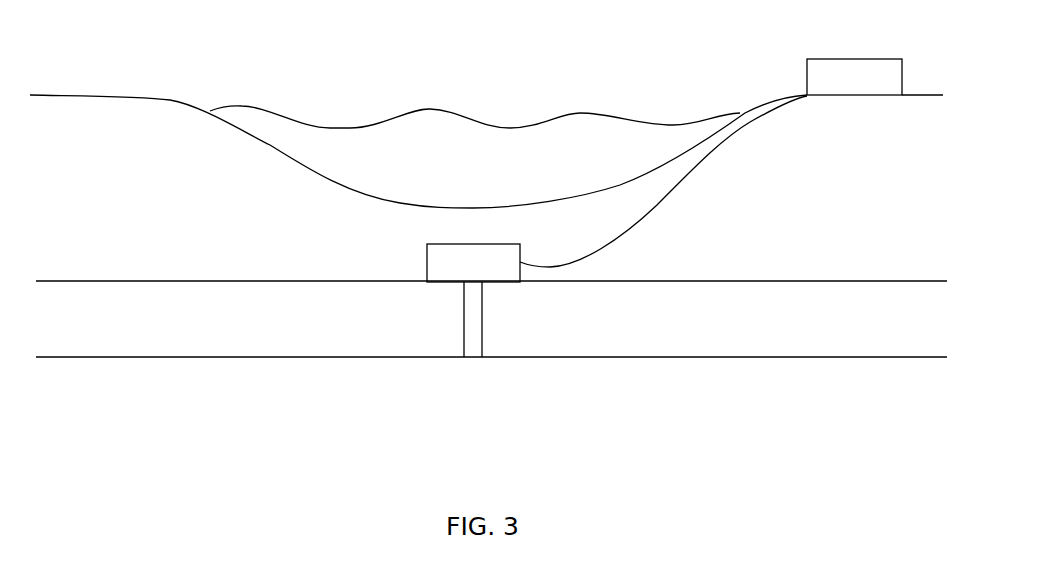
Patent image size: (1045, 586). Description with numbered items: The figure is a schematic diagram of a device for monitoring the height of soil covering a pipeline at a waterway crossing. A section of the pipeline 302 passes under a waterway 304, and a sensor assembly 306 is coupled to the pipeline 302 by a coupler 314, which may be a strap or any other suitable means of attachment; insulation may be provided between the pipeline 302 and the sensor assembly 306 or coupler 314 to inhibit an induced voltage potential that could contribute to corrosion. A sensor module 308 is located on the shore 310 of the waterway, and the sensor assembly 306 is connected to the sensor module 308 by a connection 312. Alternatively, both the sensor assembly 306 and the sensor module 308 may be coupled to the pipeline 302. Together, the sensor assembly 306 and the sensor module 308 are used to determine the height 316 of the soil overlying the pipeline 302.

The pipeline 302 is at (323, 330).
The waterway 304 is at (493, 163).
The sensor assembly 306 is at (473, 263).
The sensor module 308 is at (854, 77).
The shore 310 is at (876, 130).
The connection 312 is at (658, 207).
The coupler 314 is at (473, 318).
The height 316 is at (413, 208).